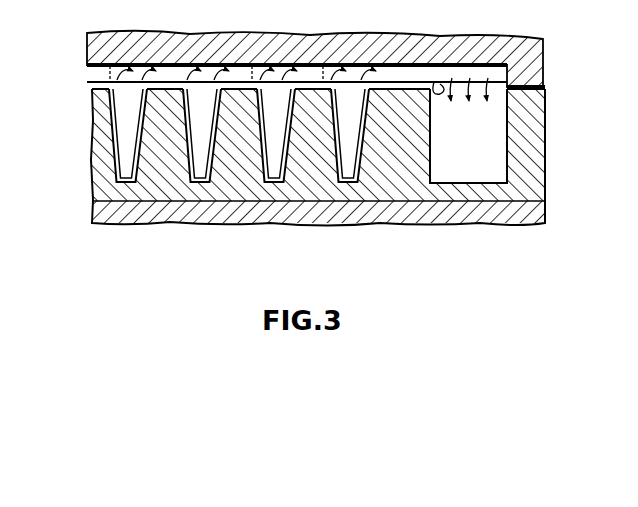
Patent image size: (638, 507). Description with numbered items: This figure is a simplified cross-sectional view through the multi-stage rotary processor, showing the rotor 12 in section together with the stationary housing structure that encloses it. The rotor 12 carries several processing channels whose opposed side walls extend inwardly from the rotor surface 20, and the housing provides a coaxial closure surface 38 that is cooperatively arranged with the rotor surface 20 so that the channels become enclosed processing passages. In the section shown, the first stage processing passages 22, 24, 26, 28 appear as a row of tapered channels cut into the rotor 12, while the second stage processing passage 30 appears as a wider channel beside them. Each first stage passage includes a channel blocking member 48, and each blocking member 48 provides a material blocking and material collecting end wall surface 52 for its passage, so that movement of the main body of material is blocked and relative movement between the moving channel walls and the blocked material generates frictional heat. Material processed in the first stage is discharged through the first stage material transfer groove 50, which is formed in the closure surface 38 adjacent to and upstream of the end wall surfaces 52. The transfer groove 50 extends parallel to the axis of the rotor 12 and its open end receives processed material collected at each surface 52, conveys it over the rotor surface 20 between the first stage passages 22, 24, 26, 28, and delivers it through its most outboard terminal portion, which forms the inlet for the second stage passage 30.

The rotor 12 is at (545, 152).
The rotor surface 20 is at (165, 89).
The first stage processing passage 22 is at (108, 128).
The first stage processing passage 24 is at (202, 182).
The first stage processing passage 26 is at (277, 182).
The first stage processing passage 28 is at (345, 182).
The second stage processing passage 30 is at (477, 170).
The coaxial closure surface 38 is at (456, 84).
The channel blocking member 48 is at (131, 33).
The first stage material transfer groove 50 is at (98, 72).
The end wall surface 52 is at (123, 163).